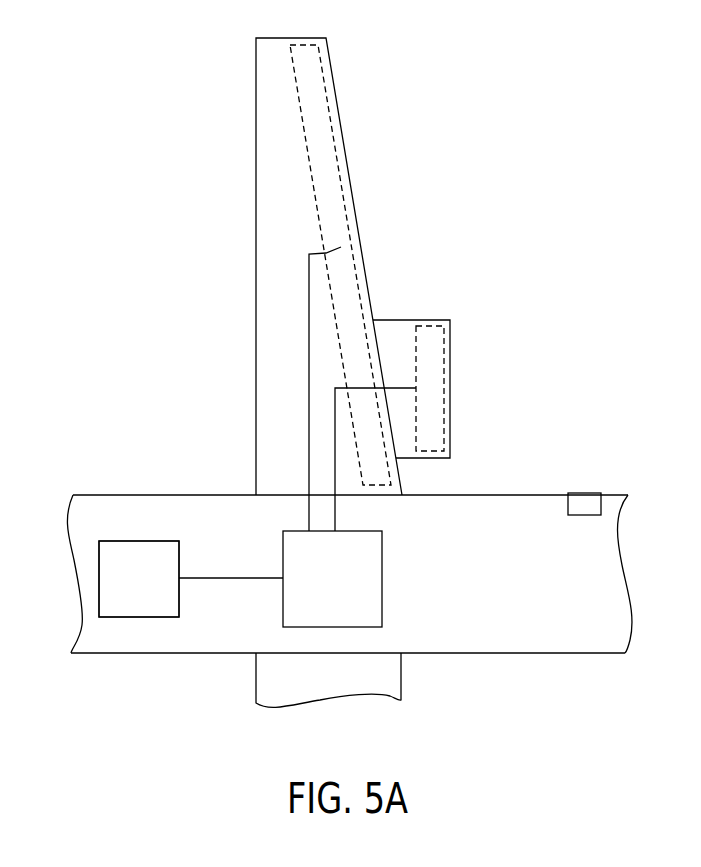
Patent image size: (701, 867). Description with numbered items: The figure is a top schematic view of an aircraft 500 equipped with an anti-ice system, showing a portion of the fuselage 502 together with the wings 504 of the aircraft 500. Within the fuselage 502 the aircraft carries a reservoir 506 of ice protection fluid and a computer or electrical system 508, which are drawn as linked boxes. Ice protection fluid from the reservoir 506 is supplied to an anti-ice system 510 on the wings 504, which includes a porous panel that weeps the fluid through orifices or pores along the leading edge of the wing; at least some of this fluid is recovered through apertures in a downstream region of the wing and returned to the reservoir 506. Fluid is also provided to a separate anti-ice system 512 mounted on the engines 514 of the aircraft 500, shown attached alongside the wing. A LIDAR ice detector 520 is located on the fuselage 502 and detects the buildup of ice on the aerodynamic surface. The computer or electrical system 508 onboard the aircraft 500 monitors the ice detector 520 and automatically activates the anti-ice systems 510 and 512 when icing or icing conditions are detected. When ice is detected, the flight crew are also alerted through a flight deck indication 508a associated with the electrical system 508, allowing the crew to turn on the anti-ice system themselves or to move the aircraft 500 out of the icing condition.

The aircraft 500 is at (558, 100).
The fuselage 502 is at (533, 508).
The wings 504 is at (268, 411).
The reservoir 506 is at (370, 587).
The computer or electrical system 508 is at (163, 560).
The flight deck indication 508a is at (143, 595).
The anti-ice system 510 is at (320, 172).
The anti-ice system 512 is at (438, 358).
The engines 514 is at (393, 333).
The LIDAR ice detector 520 is at (583, 508).